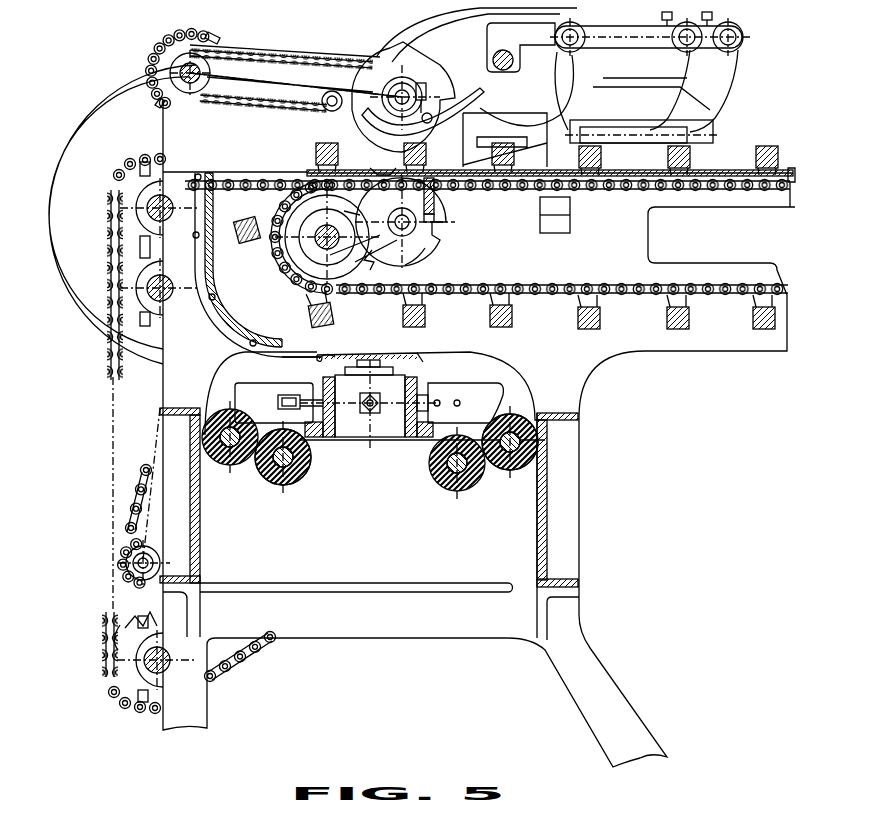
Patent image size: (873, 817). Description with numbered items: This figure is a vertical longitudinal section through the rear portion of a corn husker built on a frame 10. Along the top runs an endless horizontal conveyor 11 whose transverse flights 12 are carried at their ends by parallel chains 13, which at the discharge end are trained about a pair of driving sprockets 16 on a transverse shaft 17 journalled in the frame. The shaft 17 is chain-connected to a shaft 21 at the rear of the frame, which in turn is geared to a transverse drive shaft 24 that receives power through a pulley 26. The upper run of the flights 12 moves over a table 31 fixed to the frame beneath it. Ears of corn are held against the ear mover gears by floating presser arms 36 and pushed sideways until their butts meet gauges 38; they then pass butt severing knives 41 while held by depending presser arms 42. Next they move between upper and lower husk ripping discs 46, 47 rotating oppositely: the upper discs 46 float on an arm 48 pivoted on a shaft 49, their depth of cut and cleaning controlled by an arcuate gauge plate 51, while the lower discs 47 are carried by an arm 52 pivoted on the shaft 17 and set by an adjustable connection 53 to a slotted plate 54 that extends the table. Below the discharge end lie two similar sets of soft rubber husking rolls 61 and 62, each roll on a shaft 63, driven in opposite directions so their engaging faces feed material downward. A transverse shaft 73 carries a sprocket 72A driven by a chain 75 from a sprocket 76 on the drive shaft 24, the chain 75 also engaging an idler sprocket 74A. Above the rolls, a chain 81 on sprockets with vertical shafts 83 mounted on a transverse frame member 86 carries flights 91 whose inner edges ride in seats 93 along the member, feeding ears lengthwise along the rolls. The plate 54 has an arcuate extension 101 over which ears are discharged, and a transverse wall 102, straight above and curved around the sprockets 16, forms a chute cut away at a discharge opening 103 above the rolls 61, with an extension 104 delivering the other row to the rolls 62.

The frame 10 is at (581, 512).
The endless horizontal conveyor 11 is at (770, 146).
The flights 12 is at (316, 154).
The chains 13 is at (720, 263).
The driving sprockets 16 is at (338, 290).
The transverse shaft 17 is at (300, 262).
The shaft 21 is at (166, 296).
The transverse drive shaft 24 is at (166, 200).
The pulley 26 is at (62, 93).
The frame plate or table 31 is at (735, 170).
The floating presser arms 36 is at (720, 76).
The gauges 38 is at (636, 87).
The butt severing knives 41 is at (528, 165).
The floating presser arms 42 is at (558, 114).
The upper husk ripping discs 46 is at (380, 62).
The lower husk ripping discs 47 is at (428, 256).
The arm 48 is at (272, 68).
The shaft 49 is at (189, 86).
The arcuate gauge plate 51 is at (476, 94).
The arm 52 is at (395, 266).
The adjustable connection 53 is at (436, 232).
The slotted plate 54 is at (380, 170).
The husking rolls 61 is at (264, 477).
The husking rolls 62 is at (500, 477).
The shaft 63 is at (236, 468).
The sprocket 72A is at (115, 636).
The transverse shaft 73 is at (165, 668).
The idler sprocket 74A is at (125, 545).
The chain 75 is at (112, 268).
The sprocket 76 is at (106, 202).
The chain 81 is at (428, 395).
The shafts 83 is at (368, 360).
The frame member 86 is at (406, 437).
The flights 91 is at (262, 385).
The seats 93 is at (327, 440).
The arcuate extension 101 is at (275, 202).
The transverse wall 102 is at (214, 268).
The discharge opening 103 is at (300, 343).
The extension 104 is at (418, 355).